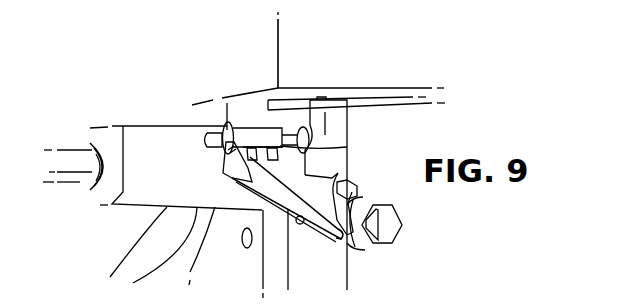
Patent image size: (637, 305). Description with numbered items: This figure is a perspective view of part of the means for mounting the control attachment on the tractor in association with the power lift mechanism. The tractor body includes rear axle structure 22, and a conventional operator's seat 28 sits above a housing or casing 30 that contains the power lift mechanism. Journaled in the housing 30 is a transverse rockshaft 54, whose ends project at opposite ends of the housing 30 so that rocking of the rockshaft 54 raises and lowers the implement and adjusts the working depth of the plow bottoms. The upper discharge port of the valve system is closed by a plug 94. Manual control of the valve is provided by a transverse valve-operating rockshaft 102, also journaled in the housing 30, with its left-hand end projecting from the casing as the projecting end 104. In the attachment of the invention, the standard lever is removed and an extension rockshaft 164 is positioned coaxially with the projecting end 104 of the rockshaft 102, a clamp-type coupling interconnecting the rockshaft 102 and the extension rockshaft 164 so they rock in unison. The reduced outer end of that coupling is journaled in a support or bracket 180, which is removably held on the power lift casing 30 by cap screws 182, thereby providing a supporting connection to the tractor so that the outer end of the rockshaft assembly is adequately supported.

The rear axle structure 22 is at (143, 240).
The operator's seat 28 is at (280, 47).
The power lift housing or casing 30 is at (233, 107).
The rockshaft 54 is at (80, 182).
The plug 94 is at (402, 225).
The valve-operating rockshaft 102 is at (291, 133).
The projecting end of the valve-operating rockshaft 104 is at (347, 144).
The extension rockshaft 164 is at (203, 139).
The support or bracket 180 is at (238, 165).
The cap screws 182 is at (330, 226).